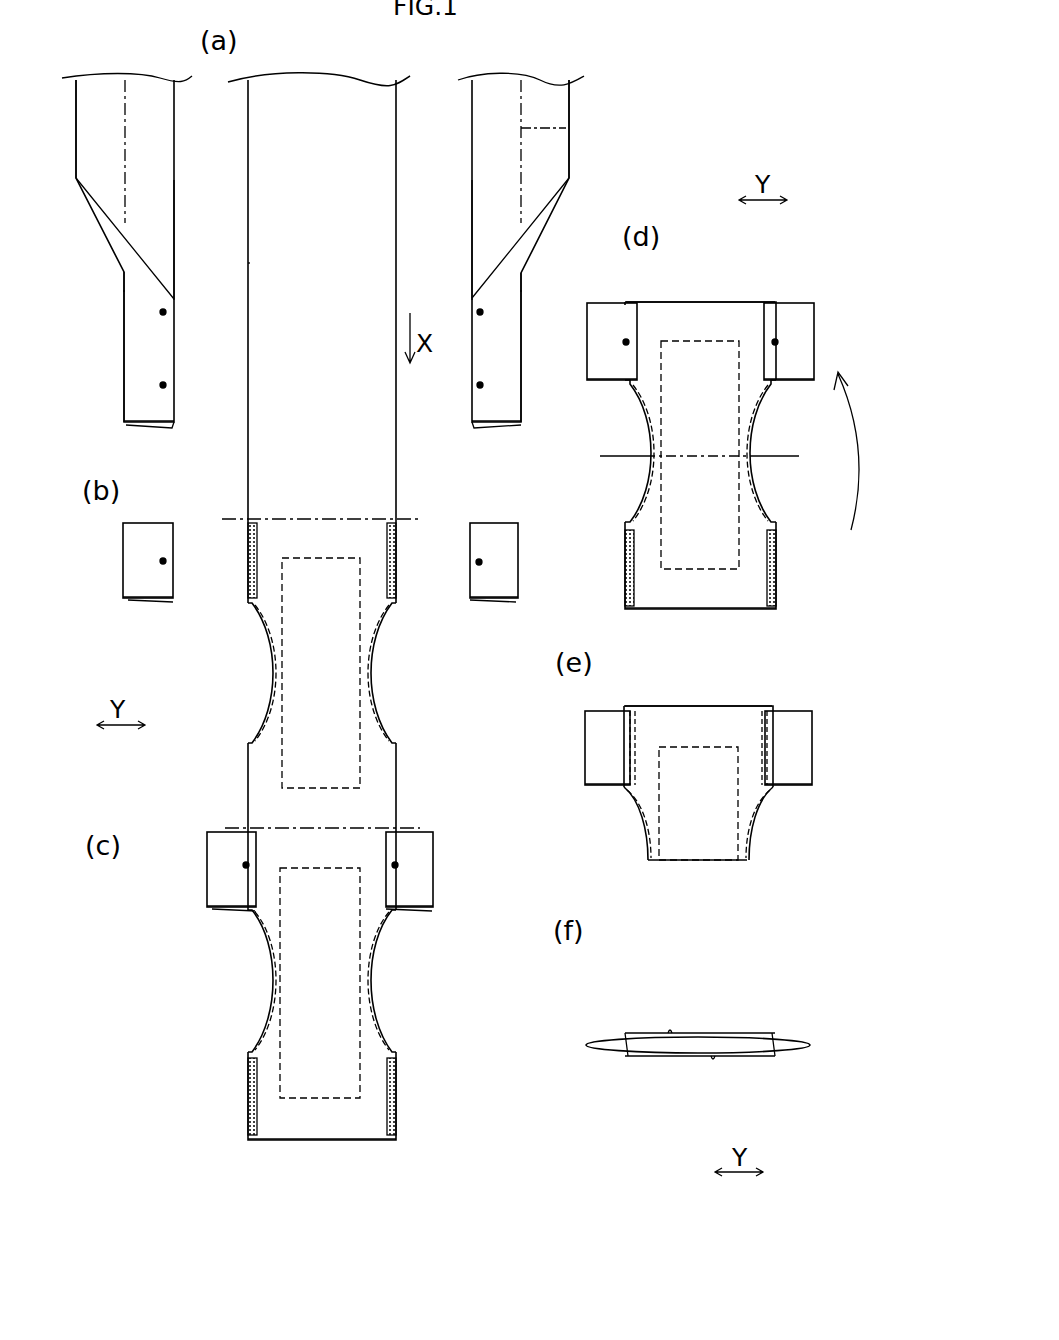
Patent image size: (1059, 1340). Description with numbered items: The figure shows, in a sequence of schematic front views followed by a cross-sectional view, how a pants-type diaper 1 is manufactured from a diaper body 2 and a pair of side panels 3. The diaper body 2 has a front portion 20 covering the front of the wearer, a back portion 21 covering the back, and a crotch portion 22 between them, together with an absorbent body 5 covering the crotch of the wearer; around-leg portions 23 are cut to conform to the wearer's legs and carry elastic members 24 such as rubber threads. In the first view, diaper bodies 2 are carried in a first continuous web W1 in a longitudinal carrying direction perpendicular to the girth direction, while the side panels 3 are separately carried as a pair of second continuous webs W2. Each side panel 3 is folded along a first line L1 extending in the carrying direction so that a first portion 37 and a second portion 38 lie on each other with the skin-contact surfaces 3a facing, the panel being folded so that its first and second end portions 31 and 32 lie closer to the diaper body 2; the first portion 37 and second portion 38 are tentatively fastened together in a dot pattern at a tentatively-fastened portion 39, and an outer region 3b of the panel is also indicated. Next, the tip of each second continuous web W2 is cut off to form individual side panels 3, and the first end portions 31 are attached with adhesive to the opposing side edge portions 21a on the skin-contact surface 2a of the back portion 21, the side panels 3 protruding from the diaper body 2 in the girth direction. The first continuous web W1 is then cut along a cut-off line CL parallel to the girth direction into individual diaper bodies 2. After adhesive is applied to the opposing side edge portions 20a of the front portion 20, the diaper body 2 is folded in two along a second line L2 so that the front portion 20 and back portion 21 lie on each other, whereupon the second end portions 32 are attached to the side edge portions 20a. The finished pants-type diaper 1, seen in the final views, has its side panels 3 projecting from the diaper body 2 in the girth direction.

The pants-type diaper 1 is at (575, 841).
The diaper body 2 is at (370, 510).
The skin-contact surface 2a is at (378, 266).
The side panel 3 is at (125, 393).
The skin-contact surface 3a is at (164, 165).
The narrow portion of side flap 3b is at (136, 346).
The absorbent body 5 is at (332, 646).
The front portion 20 is at (296, 808).
The side edge portion 20a is at (250, 1093).
The back portion 21 is at (310, 532).
The side edge portion 21a is at (257, 558).
The crotch portion 22 is at (372, 706).
The around-leg portion 23 is at (262, 625).
The elastic member 24 is at (270, 649).
The first end portion 31 is at (168, 425).
The second end portion 32 is at (170, 409).
The first portion 37 is at (158, 213).
The second portion 38 is at (97, 129).
The tentatively-fastened portion 39 is at (166, 313).
The first line L1 is at (100, 226).
The second line L2 is at (618, 454).
The first continuous web W1 is at (262, 264).
The second continuous web W2 is at (132, 293).
The cut-off line CL is at (404, 832).